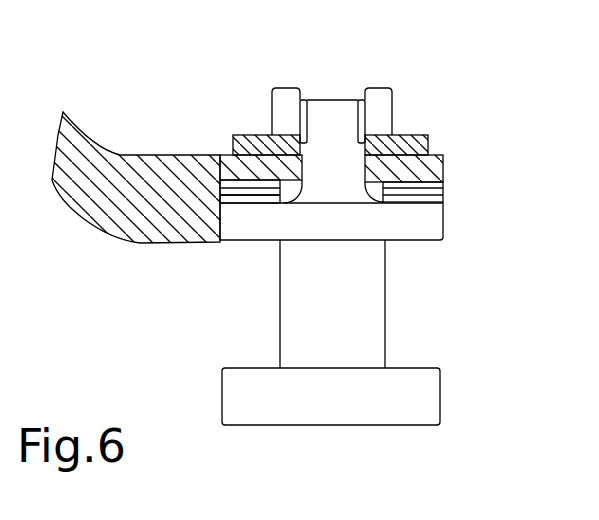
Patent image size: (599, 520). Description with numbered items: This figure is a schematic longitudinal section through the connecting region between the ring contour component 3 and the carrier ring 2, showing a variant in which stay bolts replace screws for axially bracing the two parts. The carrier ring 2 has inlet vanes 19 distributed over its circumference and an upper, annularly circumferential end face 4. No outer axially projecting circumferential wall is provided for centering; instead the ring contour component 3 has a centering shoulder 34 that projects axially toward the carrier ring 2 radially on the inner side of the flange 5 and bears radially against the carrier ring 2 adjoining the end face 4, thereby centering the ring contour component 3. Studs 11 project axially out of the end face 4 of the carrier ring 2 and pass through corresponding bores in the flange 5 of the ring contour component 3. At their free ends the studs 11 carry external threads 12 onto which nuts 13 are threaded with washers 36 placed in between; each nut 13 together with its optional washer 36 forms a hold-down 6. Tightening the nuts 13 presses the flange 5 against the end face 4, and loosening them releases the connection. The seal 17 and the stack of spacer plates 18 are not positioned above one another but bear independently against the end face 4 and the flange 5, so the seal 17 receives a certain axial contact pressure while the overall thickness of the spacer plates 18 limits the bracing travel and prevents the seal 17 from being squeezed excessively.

The carrier ring 2 is at (418, 308).
The ring contour component 3 is at (154, 136).
The end face 4 is at (408, 205).
The flange 5 is at (228, 153).
The hold-down 6 is at (412, 81).
The stud 11 is at (333, 117).
The external thread 12 is at (365, 128).
The nut 13 is at (378, 98).
The seal 17 is at (283, 205).
The spacer plates 18 is at (435, 188).
The inlet vanes 19 is at (305, 302).
The centering shoulder 34 is at (218, 222).
The washer 36 is at (258, 135).